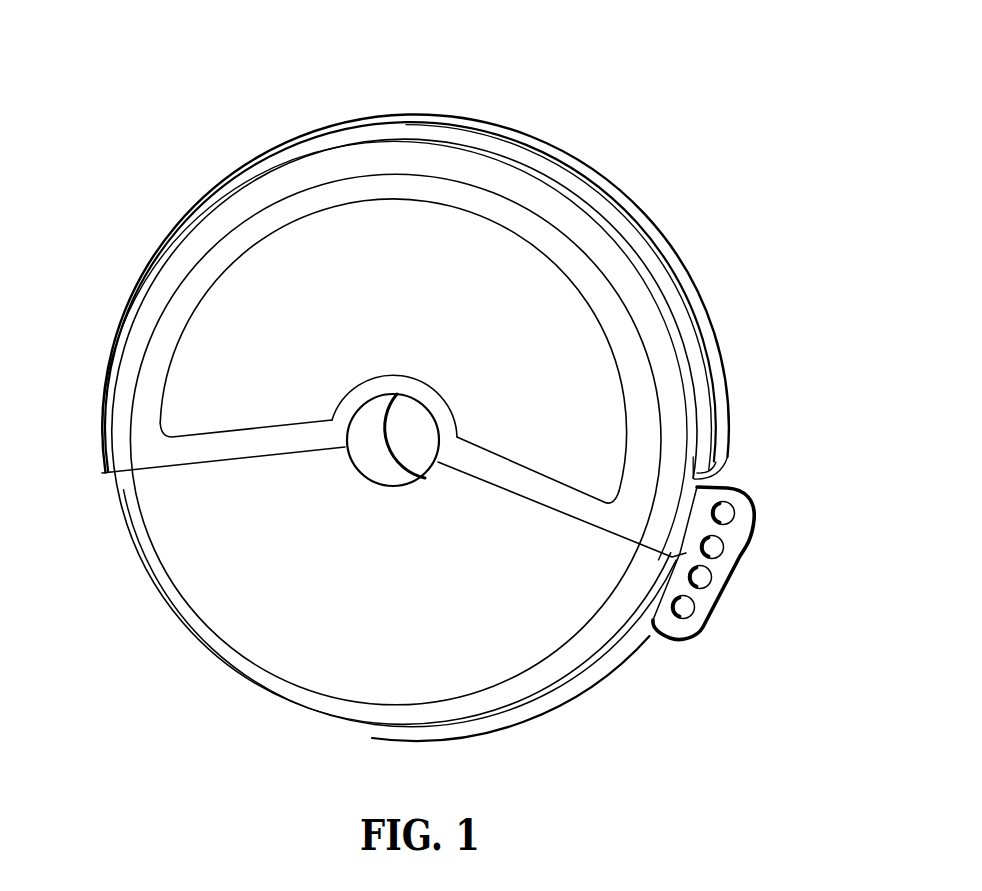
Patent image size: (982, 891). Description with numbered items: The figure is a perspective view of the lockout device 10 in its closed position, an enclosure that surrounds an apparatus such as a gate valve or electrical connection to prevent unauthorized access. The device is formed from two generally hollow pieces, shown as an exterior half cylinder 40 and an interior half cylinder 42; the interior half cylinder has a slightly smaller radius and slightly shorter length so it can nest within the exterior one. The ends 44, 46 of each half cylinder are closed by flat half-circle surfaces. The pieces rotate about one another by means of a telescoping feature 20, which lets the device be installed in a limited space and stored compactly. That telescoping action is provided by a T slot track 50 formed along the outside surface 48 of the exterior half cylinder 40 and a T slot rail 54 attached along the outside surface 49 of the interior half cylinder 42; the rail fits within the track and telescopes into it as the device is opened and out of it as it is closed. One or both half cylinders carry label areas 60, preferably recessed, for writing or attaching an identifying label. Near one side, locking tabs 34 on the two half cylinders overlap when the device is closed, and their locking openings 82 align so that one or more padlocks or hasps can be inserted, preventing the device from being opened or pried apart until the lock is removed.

The lockout device 10 is at (150, 102).
The telescoping feature 20 is at (760, 457).
The locking tabs 34 is at (682, 632).
The exterior half cylinder 40 is at (415, 242).
The interior half cylinder 42 is at (300, 647).
The end 44 is at (130, 363).
The end 46 is at (210, 571).
The outside surface 48 is at (606, 531).
The outside surface 49 is at (560, 611).
The T slot track 50 is at (552, 212).
The T slot rail 54 is at (532, 678).
The label areas 60 is at (228, 305).
The locking openings 82 is at (723, 513).